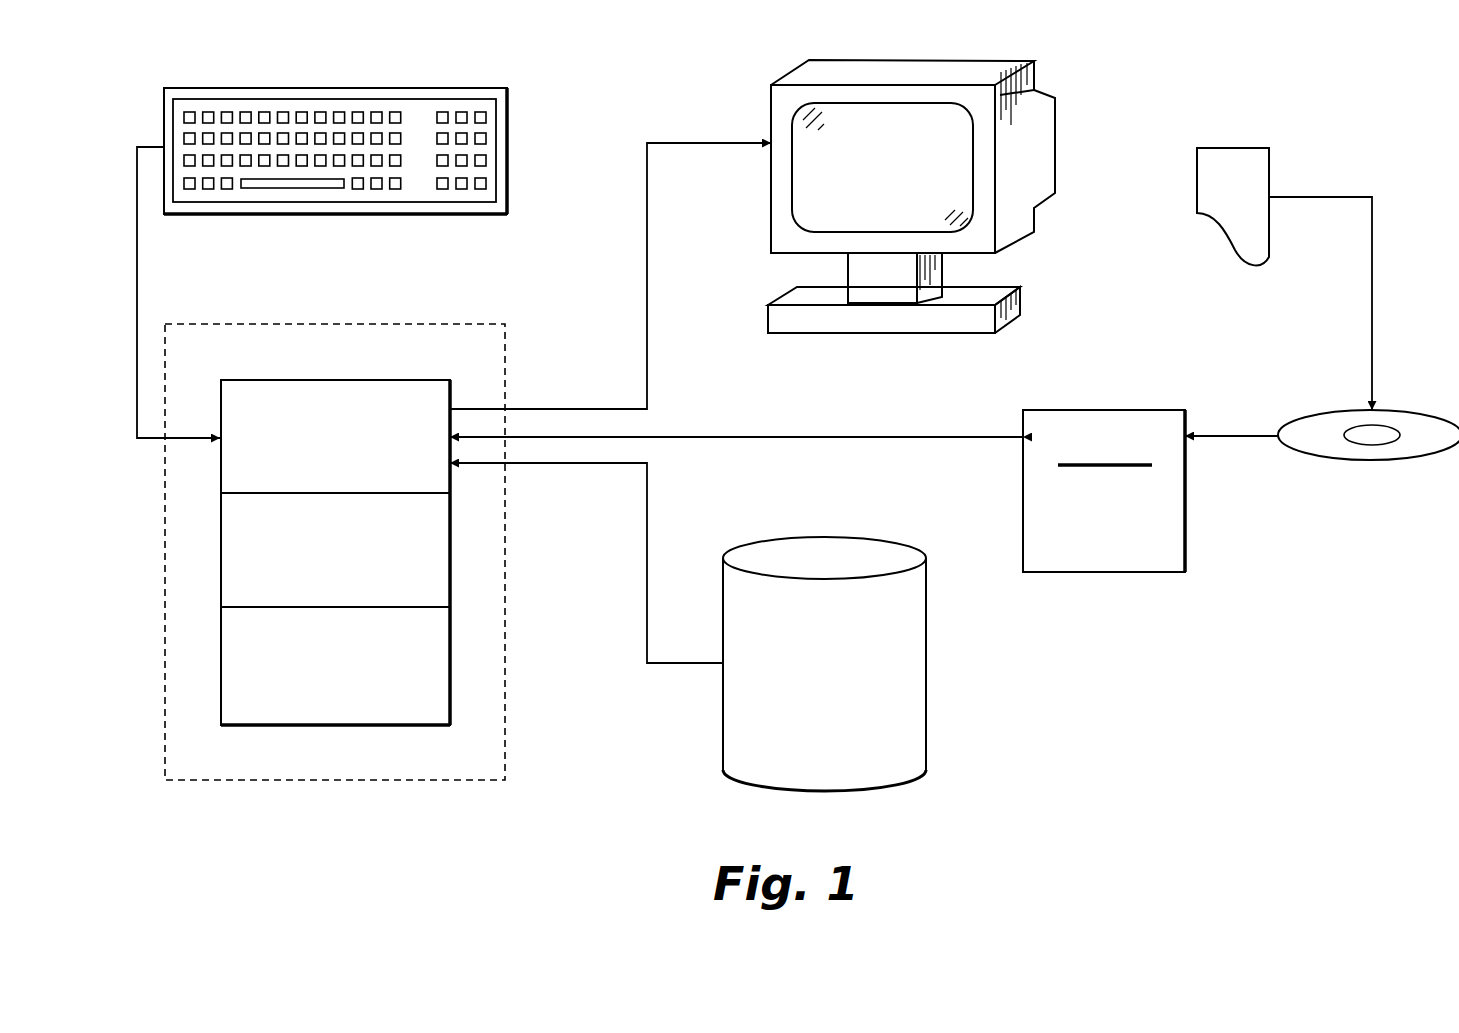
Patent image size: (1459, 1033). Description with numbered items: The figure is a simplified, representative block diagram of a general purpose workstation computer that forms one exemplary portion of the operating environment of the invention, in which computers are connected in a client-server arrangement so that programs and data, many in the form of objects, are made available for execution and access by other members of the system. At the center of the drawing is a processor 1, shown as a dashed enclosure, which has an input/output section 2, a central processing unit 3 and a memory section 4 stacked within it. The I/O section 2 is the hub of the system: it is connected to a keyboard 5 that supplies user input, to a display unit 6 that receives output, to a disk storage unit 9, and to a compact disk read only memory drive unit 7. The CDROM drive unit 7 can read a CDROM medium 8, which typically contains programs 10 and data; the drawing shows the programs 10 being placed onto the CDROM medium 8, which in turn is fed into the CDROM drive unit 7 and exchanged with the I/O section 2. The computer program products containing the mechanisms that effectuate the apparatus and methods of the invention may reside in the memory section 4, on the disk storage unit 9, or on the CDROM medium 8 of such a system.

The processor 1 is at (457, 323).
The input/output section 2 is at (313, 387).
The central processing unit 3 is at (453, 568).
The memory section 4 is at (453, 708).
The keyboard 5 is at (485, 88).
The display unit 6 is at (978, 72).
The compact disk read only memory drive unit 7 is at (1055, 410).
The CDROM medium 8 is at (1343, 415).
The disk storage unit 9 is at (926, 635).
The programs 10 is at (1212, 157).